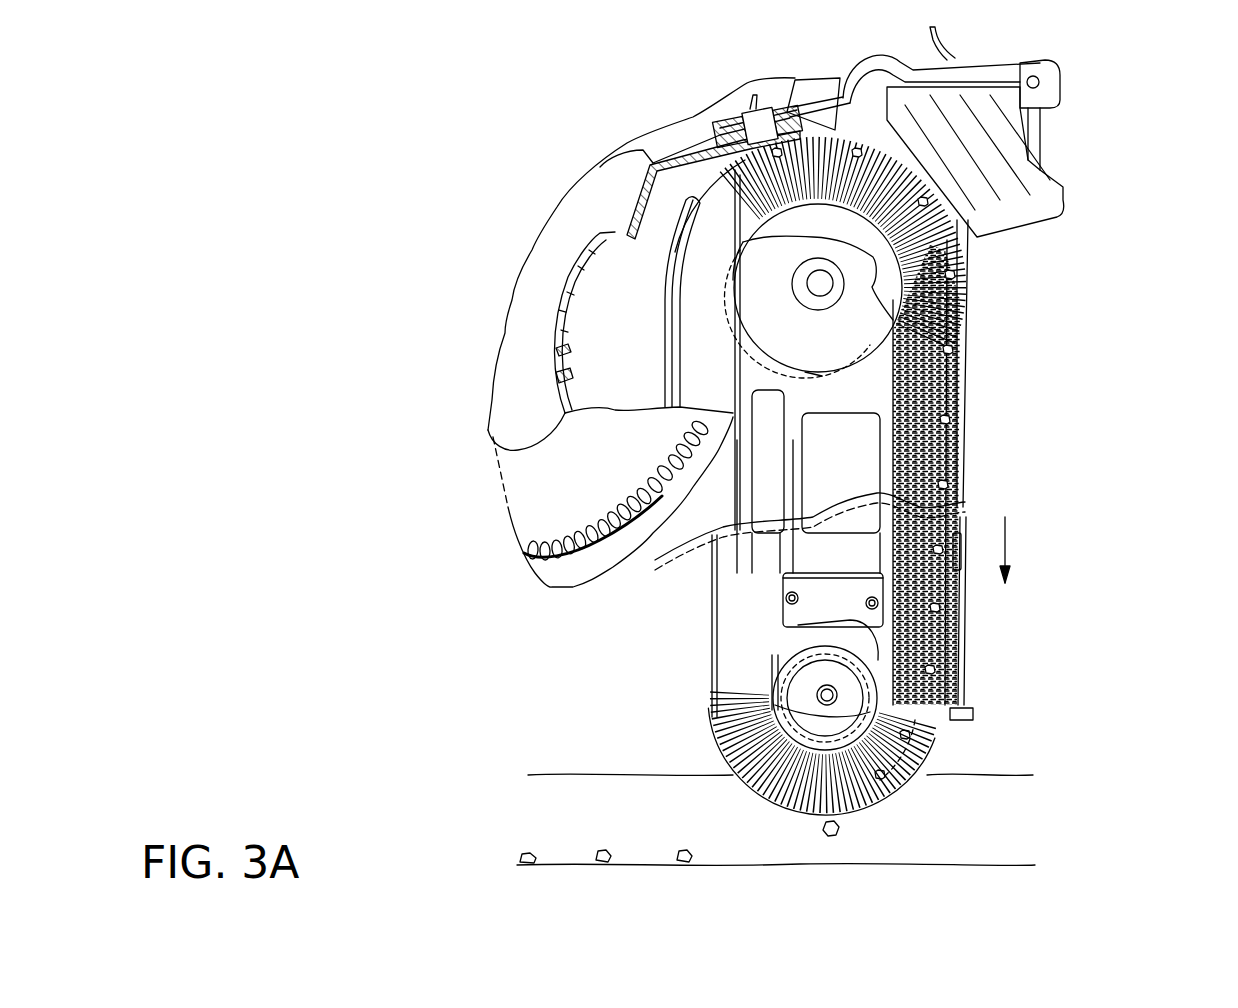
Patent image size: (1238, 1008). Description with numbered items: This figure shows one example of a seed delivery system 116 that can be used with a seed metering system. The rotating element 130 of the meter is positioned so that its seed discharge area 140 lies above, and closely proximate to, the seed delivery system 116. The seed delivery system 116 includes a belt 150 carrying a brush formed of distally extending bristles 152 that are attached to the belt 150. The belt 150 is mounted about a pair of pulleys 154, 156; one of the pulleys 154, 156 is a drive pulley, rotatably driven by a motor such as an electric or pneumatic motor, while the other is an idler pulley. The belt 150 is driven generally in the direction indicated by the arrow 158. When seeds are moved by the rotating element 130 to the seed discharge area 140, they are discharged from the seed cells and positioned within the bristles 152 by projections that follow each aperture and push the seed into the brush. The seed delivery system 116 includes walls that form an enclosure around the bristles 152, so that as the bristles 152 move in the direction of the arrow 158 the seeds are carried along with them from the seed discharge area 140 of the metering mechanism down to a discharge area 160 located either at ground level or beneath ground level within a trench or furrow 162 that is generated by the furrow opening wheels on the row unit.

The seed delivery system 116 is at (968, 485).
The rotating element 130 is at (543, 203).
The seed discharge area 140 is at (790, 38).
The belt 150 is at (893, 410).
The bristles 152 is at (960, 323).
The pulley 154 is at (880, 272).
The pulley 156 is at (845, 732).
The arrow 158 is at (1005, 543).
The discharge area 160 is at (872, 805).
The furrow 162 is at (1040, 840).